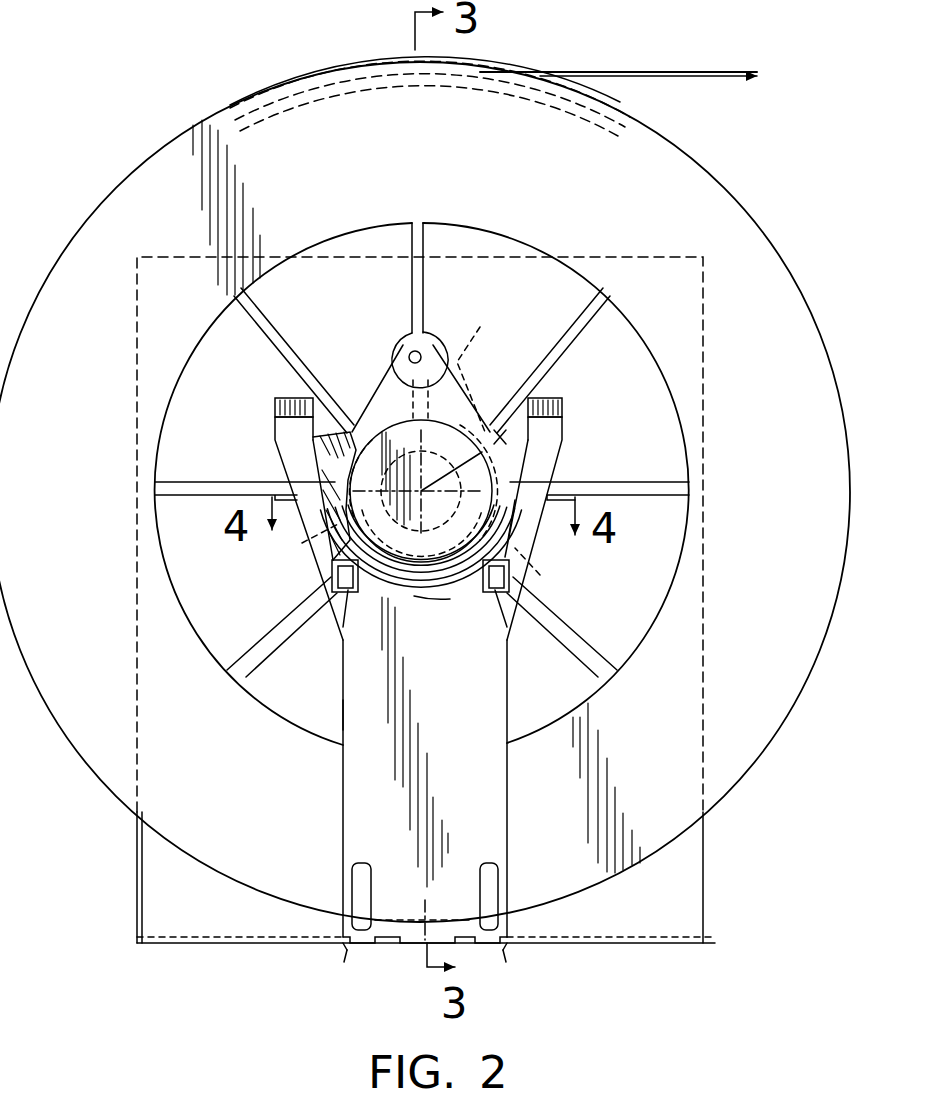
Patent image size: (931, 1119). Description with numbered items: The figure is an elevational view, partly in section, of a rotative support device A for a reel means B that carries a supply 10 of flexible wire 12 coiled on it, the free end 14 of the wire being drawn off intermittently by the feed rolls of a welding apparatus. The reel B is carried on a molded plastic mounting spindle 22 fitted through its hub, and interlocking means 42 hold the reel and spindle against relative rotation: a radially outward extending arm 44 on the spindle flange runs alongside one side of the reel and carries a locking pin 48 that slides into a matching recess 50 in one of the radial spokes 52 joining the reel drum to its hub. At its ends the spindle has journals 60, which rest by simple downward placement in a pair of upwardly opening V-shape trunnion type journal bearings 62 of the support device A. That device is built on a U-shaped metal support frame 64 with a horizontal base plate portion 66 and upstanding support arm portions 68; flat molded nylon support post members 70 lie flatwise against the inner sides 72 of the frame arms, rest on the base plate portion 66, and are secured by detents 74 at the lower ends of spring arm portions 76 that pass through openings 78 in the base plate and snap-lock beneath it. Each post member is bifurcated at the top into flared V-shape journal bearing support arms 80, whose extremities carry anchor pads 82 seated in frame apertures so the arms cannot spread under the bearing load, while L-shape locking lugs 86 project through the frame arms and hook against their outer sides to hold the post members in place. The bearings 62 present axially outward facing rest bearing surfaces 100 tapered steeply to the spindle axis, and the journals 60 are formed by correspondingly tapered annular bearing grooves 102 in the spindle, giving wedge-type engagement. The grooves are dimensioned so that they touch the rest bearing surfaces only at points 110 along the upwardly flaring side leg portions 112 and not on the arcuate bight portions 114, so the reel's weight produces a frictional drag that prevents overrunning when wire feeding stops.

The reel means B is at (120, 165).
The rotative support device A is at (340, 712).
The wire supply 10 is at (290, 85).
The flexible wire 12 is at (346, 85).
The free end of the wire supply 14 is at (682, 72).
The mounting spindle 22 is at (368, 458).
The interlocking means 42 is at (436, 332).
The radially outward extending arm 44 is at (392, 395).
The locking pin 48 is at (429, 434).
The recess 50 is at (413, 352).
The radial spokes 52 is at (430, 242).
The journals 60 is at (377, 420).
The V-shape trunnion type journal bearings 62 is at (512, 505).
The support frame 64 is at (134, 836).
The base plate portion 66 is at (200, 945).
The support arm portions 68 is at (138, 865).
The support post members 70 is at (340, 790).
The inner sides 72 is at (155, 908).
The detents 74 is at (343, 948).
The spring arm portions 76 is at (350, 890).
The openings 78 is at (346, 964).
The V-shape journal bearing support arms 80 is at (275, 426).
The anchor pad 82 is at (275, 402).
The L-shape locking lugs 86 is at (346, 598).
The rest bearing surfaces 100 is at (468, 598).
The annular bearing grooves 102 is at (467, 419).
The points 110 is at (421, 561).
The side leg portions 112 is at (300, 487).
The bight portions 114 is at (422, 603).